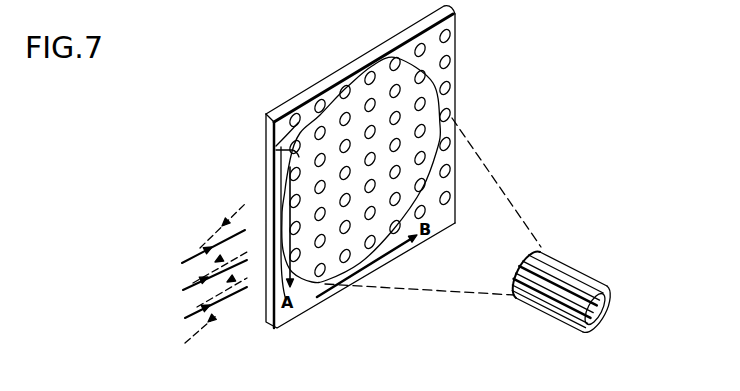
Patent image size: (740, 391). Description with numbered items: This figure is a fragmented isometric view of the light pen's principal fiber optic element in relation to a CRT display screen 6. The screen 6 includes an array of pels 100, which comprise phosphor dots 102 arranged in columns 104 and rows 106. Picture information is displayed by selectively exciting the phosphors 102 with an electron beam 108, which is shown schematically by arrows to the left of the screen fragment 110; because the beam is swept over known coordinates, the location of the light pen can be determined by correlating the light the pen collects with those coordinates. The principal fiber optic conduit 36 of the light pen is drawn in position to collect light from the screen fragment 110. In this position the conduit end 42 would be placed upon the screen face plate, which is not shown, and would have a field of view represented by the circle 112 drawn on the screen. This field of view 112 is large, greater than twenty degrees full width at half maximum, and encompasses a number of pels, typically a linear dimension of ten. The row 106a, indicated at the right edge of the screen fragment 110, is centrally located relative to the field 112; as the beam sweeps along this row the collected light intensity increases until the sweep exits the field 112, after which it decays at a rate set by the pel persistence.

The CRT display screen 6 is at (292, 86).
The pels 100 is at (280, 144).
The phosphor dots 102 is at (288, 99).
The columns 104 is at (364, 55).
The rows 106 is at (474, 23).
The row 106a is at (460, 111).
The electron beam 108 is at (185, 268).
The screen fragment 110 is at (456, 90).
The field of view 112 is at (350, 74).
The principal fiber optic conduit 36 is at (568, 273).
The conduit end 42 is at (521, 270).